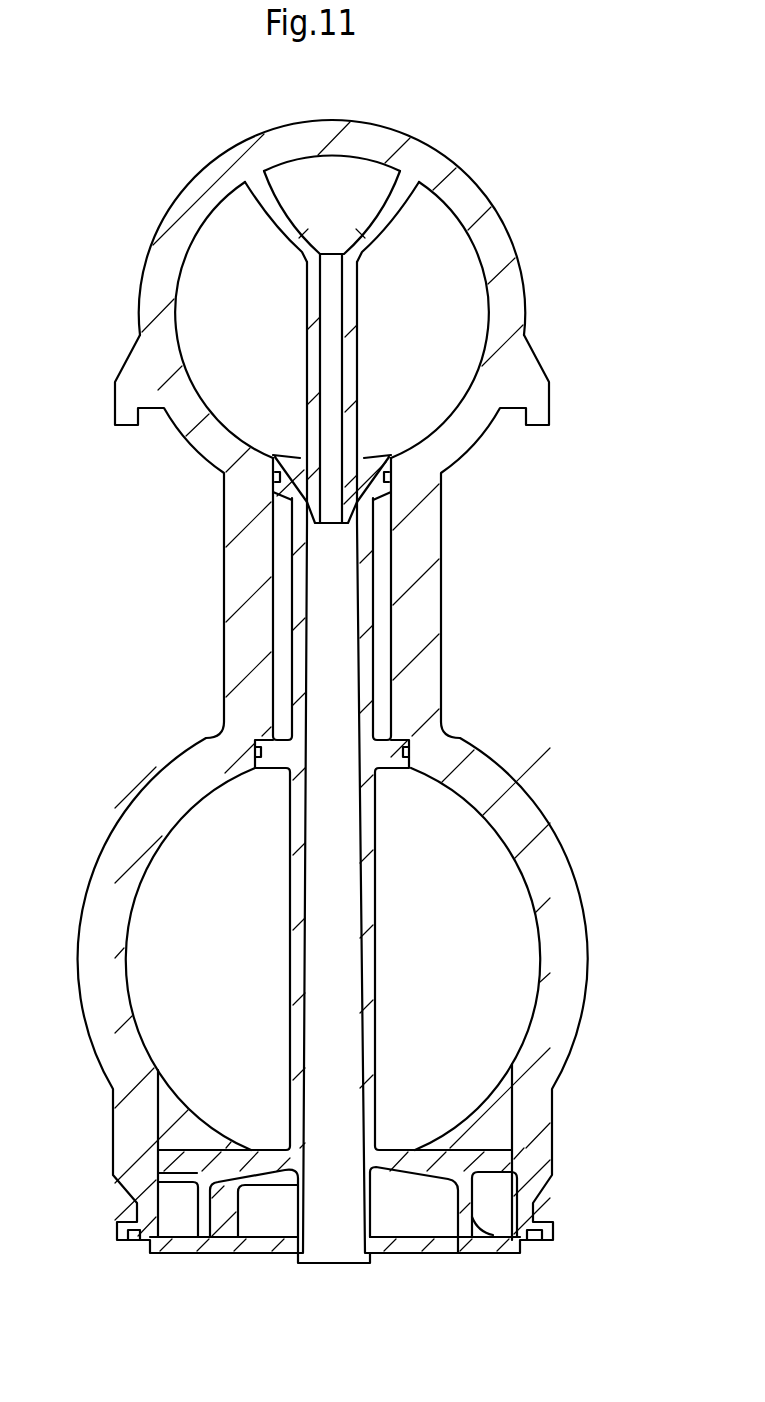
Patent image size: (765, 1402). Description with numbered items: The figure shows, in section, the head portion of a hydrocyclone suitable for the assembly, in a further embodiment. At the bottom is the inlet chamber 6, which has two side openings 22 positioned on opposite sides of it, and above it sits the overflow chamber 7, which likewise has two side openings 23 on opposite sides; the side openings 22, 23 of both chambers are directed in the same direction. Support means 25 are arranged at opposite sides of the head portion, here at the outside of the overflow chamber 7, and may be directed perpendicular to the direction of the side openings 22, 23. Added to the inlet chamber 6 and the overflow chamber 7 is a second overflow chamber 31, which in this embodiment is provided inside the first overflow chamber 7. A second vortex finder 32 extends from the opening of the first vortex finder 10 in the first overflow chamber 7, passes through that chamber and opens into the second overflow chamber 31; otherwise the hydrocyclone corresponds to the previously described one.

The inlet chamber 6 is at (447, 1004).
The overflow chamber 7 is at (421, 361).
The first vortex finder 10 is at (365, 868).
The side openings of the inlet chamber 22 is at (562, 907).
The side openings of the overflow chamber 23 is at (497, 265).
The support means 25 is at (125, 404).
The second overflow chamber 31 is at (345, 178).
The second vortex finder 32 is at (348, 302).